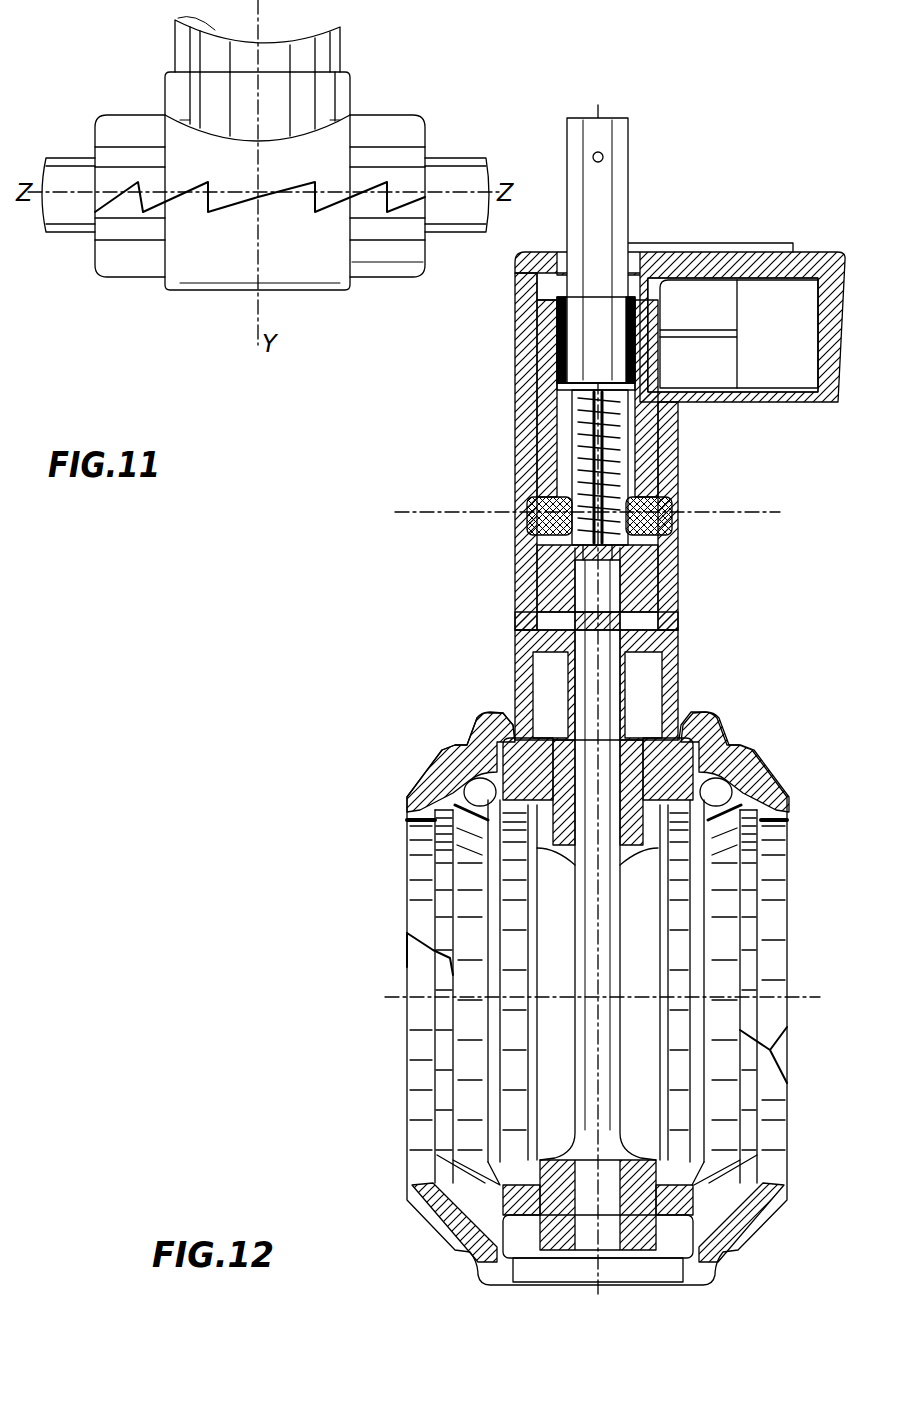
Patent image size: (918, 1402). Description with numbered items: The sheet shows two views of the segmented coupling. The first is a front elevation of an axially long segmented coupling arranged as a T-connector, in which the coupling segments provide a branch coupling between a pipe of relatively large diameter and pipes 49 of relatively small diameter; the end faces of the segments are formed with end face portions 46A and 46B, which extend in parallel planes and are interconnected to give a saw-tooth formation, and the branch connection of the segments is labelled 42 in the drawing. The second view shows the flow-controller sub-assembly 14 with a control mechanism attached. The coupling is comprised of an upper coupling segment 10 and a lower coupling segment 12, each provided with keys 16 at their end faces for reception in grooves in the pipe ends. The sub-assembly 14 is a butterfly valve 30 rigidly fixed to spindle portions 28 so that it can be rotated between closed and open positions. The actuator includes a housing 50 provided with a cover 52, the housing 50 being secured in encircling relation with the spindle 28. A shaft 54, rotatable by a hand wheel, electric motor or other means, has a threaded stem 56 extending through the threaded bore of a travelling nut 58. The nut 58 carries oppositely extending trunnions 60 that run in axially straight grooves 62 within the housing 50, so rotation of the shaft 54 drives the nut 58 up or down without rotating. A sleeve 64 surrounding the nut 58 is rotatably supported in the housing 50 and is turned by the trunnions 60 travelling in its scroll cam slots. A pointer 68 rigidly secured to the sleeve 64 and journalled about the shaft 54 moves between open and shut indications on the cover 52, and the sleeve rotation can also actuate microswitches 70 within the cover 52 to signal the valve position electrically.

In FIG. 11, the upper coupling segment 10 is at (398, 122).
In FIG. 12, the upper coupling segment 10 is at (787, 795).
In FIG. 11, the lower coupling segment 12 is at (400, 262).
In FIG. 12, the lower coupling segment 12 is at (762, 1212).
In FIG. 12, the flow controller sub-assembly 14 is at (692, 752).
In FIG. 12, the keys 16 is at (780, 845).
In FIG. 12, the spindle portions 28 is at (618, 680).
In FIG. 12, the butterfly valve 30 is at (605, 938).
In FIG. 11, the collar 42 is at (345, 95).
In FIG. 11, the end face portion 46A is at (228, 210).
In FIG. 11, the end face portion 46B is at (240, 195).
In FIG. 11, the pipes 49 is at (70, 157).
In FIG. 12, the housing 50 is at (680, 487).
In FIG. 12, the cover 52 is at (838, 258).
In FIG. 12, the shaft 54 is at (630, 203).
In FIG. 12, the threaded stem 56 is at (623, 444).
In FIG. 12, the travelling nut 58 is at (645, 535).
In FIG. 12, the trunnions 60 is at (540, 512).
In FIG. 12, the axially straight grooves 62 is at (535, 458).
In FIG. 12, the sleeve 64 is at (650, 592).
In FIG. 12, the pointer 68 is at (718, 243).
In FIG. 12, the microswitches 70 is at (727, 352).